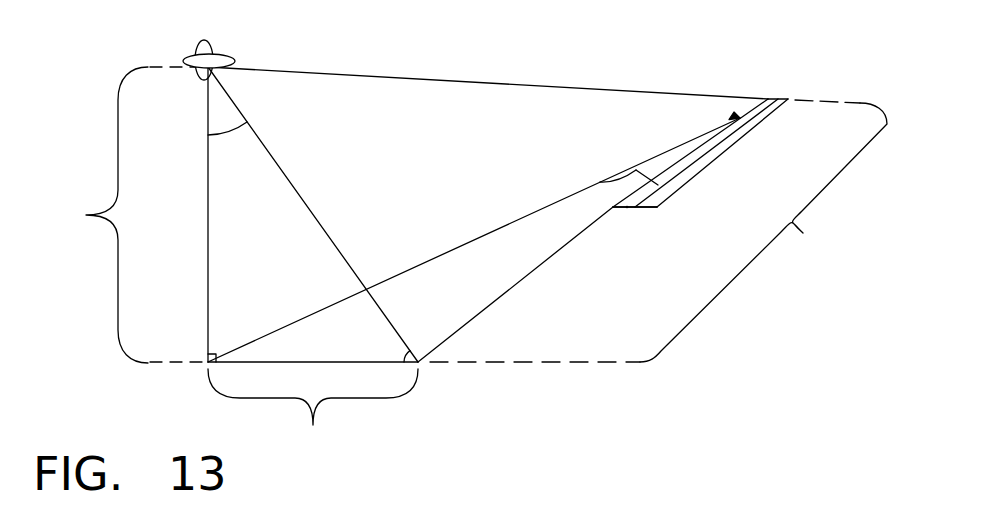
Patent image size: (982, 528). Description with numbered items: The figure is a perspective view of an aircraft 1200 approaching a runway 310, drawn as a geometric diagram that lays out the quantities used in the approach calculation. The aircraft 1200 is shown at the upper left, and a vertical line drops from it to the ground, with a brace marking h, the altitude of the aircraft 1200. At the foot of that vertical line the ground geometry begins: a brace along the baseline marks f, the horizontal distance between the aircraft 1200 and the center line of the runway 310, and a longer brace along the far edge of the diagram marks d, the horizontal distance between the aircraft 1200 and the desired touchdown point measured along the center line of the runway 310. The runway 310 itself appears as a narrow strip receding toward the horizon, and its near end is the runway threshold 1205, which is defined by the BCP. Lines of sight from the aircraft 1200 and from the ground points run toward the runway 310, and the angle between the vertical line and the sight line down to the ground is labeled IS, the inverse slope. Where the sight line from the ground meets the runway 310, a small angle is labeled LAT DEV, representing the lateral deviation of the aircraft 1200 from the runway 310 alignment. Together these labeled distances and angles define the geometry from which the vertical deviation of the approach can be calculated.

The aircraft 1200 is at (194, 54).
The runway 310 is at (713, 163).
The runway threshold 1205 is at (658, 208).
The inverse slope IS is at (232, 134).
The lateral deviation LAT DEV is at (602, 182).
The element BCP is at (627, 208).
The altitude of the aircraft h is at (105, 215).
The horizontal distance between the aircraft and the center line of the runway f is at (313, 413).
The horizontal distance between the aircraft and the desired touchdown point d is at (763, 232).